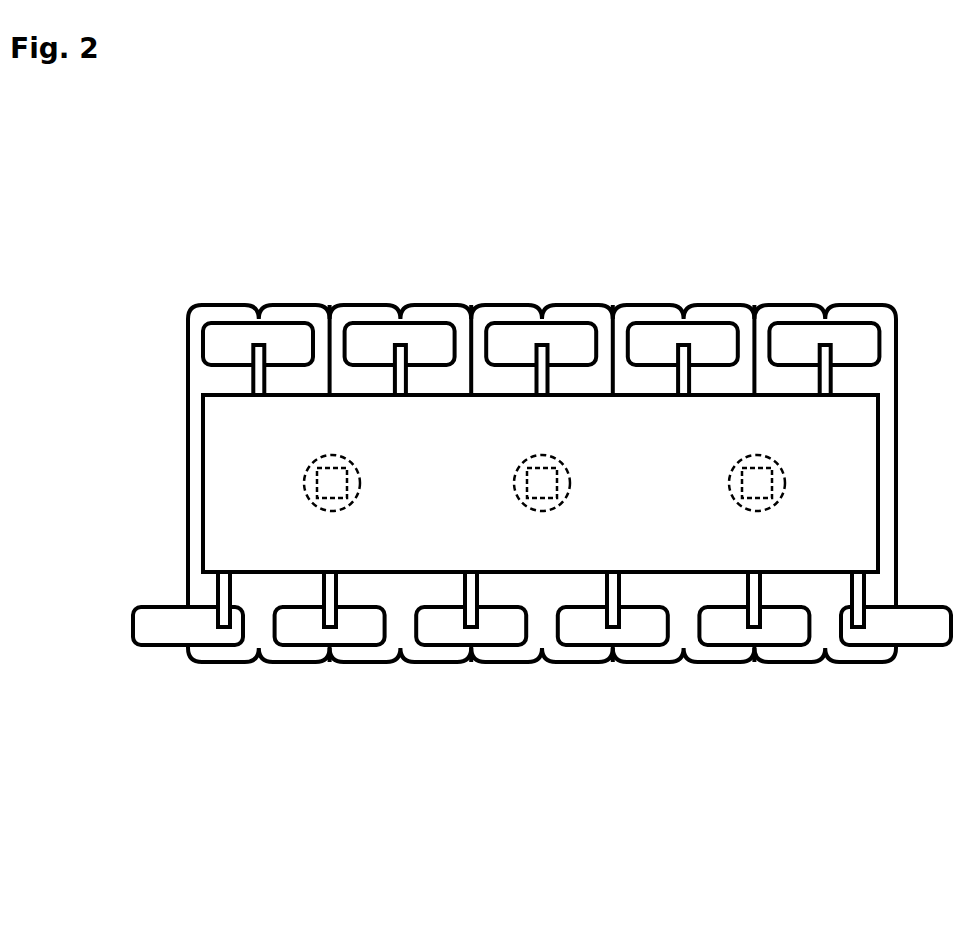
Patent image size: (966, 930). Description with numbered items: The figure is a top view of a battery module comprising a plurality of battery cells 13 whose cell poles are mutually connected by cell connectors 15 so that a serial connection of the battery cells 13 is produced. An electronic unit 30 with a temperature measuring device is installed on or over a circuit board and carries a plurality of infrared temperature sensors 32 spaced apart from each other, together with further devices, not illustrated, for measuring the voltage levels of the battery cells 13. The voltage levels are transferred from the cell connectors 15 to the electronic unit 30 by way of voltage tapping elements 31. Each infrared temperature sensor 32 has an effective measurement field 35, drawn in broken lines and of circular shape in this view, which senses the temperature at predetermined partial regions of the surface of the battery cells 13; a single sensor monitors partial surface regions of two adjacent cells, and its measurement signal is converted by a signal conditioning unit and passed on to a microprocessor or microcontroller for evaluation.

The battery cells 13 is at (800, 313).
The cell connectors 15 is at (303, 625).
The electronic unit 30 is at (248, 447).
The voltage tapping elements 31 is at (329, 587).
The infrared temperature sensors 32 is at (535, 477).
The effective measurement field 35 is at (562, 483).